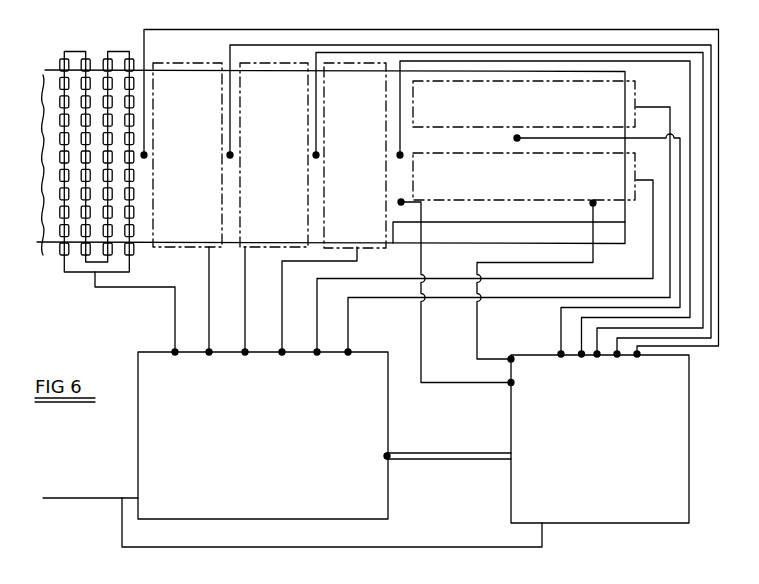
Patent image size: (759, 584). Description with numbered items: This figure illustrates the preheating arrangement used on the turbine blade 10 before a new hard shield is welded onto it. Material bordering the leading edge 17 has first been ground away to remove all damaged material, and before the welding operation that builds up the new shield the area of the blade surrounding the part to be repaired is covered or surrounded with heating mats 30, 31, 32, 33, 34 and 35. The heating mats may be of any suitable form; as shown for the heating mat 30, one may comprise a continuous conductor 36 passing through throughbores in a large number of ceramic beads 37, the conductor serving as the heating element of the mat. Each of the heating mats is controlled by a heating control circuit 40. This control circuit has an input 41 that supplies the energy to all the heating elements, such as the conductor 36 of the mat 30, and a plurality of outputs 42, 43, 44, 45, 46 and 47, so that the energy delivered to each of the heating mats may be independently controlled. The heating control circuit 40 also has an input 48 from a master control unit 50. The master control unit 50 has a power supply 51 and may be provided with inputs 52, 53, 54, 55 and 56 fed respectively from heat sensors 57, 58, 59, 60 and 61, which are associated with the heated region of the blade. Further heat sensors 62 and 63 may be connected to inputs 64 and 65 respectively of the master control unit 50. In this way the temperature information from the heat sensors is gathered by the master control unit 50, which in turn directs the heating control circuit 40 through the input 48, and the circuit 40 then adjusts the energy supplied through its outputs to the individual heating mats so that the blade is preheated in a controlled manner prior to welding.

The turbine blade 10 is at (330, 177).
The leading edge 17 is at (566, 233).
The heating mat 30 is at (75, 140).
The heating mat 31 is at (185, 63).
The heating mat 32 is at (275, 71).
The heating mat 33 is at (356, 68).
The heating mat 34 is at (637, 92).
The heating mat 35 is at (637, 170).
The continuous conductor 36 is at (73, 273).
The ceramic beads 37 is at (60, 65).
The heating control circuit 40 is at (263, 435).
The input 41 is at (90, 488).
The output 42 is at (139, 325).
The output 43 is at (213, 313).
The output 44 is at (247, 313).
The output 45 is at (314, 313).
The output 46 is at (479, 279).
The output 47 is at (504, 243).
The input 48 is at (436, 456).
The master control unit 50 is at (600, 439).
The power supply 51 is at (332, 522).
The input 52 is at (560, 365).
The input 53 is at (582, 365).
The input 54 is at (603, 365).
The input 55 is at (622, 365).
The input 56 is at (643, 366).
The heat sensor 57 is at (147, 155).
The heat sensor 58 is at (230, 158).
The heat sensor 59 is at (316, 158).
The heat sensor 60 is at (399, 158).
The heat sensor 61 is at (514, 138).
The heat sensor 62 is at (401, 205).
The heat sensor 63 is at (595, 206).
The input 64 is at (524, 388).
The input 65 is at (524, 365).